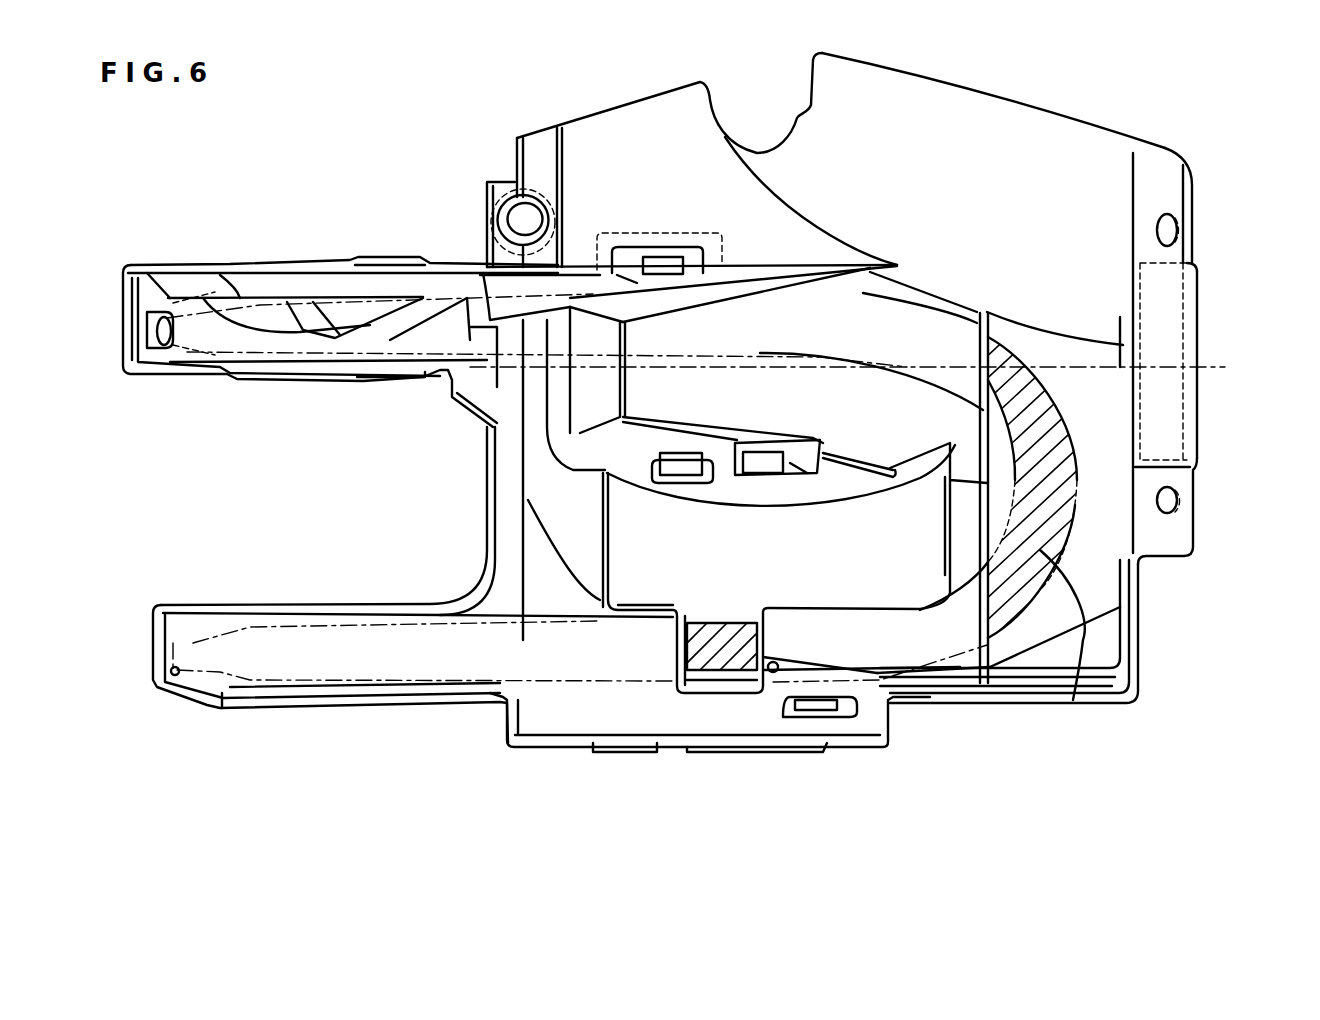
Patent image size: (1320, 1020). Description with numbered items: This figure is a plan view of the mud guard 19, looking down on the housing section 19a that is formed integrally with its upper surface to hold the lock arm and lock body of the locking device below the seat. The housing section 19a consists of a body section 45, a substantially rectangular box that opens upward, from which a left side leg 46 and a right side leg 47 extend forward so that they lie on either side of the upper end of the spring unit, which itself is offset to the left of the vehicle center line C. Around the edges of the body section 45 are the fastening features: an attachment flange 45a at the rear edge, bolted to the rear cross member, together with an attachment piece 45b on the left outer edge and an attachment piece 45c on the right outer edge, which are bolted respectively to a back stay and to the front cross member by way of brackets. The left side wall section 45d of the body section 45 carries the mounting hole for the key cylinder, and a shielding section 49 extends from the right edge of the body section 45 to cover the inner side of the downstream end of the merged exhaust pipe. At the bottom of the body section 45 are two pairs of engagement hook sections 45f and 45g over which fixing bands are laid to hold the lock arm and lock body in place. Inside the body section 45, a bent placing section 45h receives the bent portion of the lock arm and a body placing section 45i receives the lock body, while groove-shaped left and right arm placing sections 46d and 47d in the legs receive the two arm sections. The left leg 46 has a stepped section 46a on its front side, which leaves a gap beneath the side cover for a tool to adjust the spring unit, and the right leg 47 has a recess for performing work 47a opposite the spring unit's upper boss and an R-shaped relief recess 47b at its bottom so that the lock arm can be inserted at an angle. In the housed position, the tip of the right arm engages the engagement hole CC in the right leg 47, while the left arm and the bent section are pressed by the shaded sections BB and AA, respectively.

The shielding section 49 is at (935, 80).
The mud guard 19 is at (1092, 104).
The housing section 19a is at (1143, 656).
The body section 45 is at (932, 700).
The attachment flange 45a is at (1178, 422).
The attachment piece 45b is at (836, 750).
The attachment piece 45c is at (492, 180).
The left side wall section 45d is at (558, 750).
The engagement hook section 45f is at (790, 446).
The engagement hook section 45g is at (672, 247).
The bent placing section 45h is at (1098, 583).
The body placing section 45i is at (862, 520).
The left side leg 46 is at (313, 708).
The stepped section 46a is at (398, 704).
The left arm placing section 46d is at (378, 642).
The right side leg 47 is at (211, 262).
The recess for performing work 47a is at (388, 266).
The relief recess 47b is at (268, 348).
The right arm placing section 47d is at (444, 340).
The shaded section AA is at (1047, 547).
The shaded section BB is at (722, 660).
The engagement hole CC is at (165, 327).
The center line C is at (1213, 362).